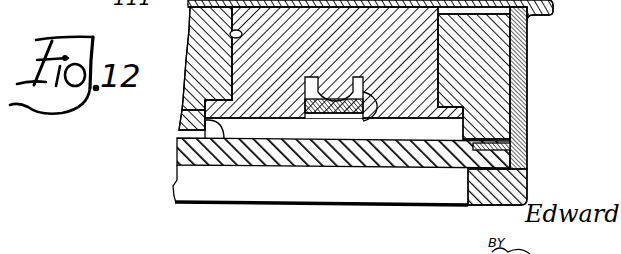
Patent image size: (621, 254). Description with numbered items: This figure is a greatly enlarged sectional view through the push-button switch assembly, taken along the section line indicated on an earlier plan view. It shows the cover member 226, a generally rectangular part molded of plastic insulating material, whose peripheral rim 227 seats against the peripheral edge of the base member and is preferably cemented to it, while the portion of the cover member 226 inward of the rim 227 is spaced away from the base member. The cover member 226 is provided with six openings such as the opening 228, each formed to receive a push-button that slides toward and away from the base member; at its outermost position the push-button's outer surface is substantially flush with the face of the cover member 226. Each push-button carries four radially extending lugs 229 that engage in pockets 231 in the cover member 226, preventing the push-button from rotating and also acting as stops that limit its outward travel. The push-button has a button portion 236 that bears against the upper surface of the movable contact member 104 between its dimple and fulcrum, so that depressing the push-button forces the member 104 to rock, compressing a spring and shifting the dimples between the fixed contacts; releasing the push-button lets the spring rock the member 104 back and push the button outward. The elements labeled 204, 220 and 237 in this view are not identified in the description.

The movable contact member 104 is at (333, 114).
The outer casing wall 204 is at (510, 184).
The insulating layer 220 is at (253, 140).
The cover member 226 is at (492, 54).
The peripheral rim 227 is at (505, 140).
The opening 228 is at (231, 37).
The radially extending lug 229 is at (207, 108).
The pocket 231 is at (217, 167).
The button portion 236 is at (364, 113).
The gap 237 is at (315, 114).